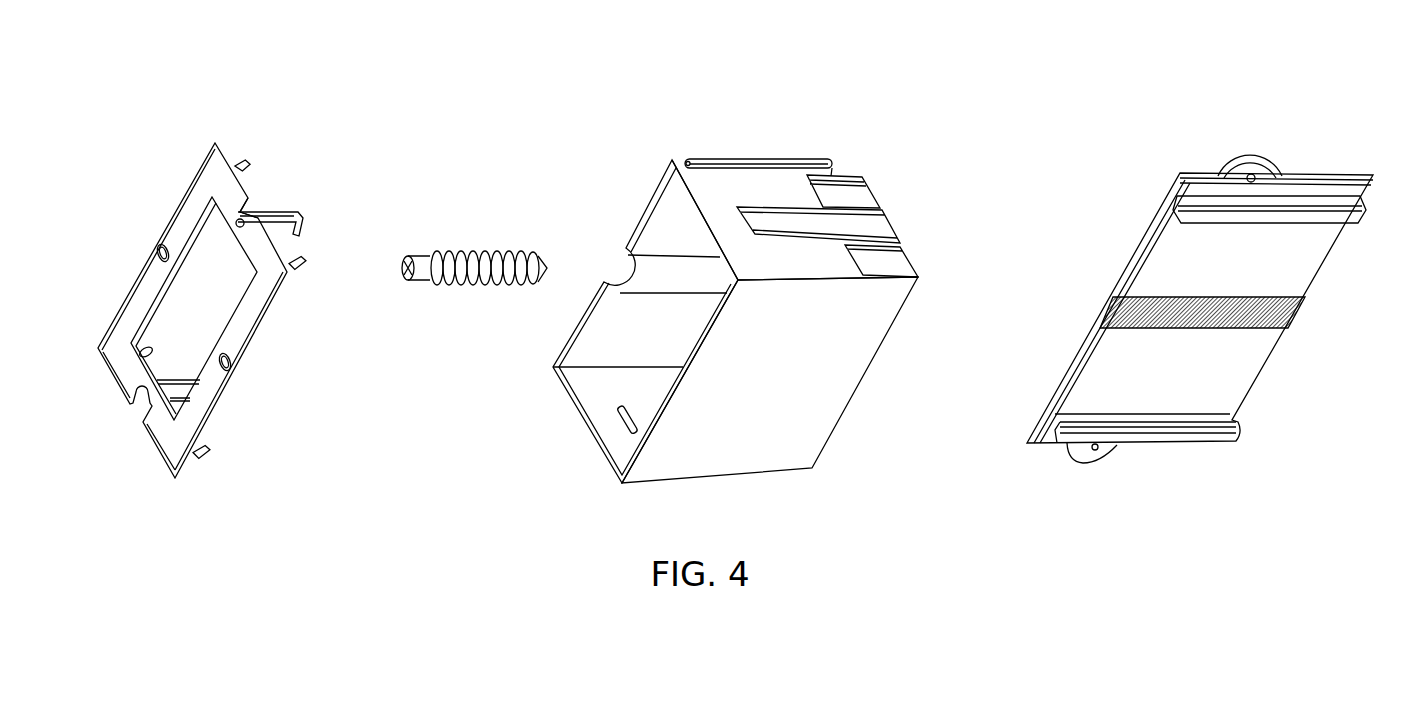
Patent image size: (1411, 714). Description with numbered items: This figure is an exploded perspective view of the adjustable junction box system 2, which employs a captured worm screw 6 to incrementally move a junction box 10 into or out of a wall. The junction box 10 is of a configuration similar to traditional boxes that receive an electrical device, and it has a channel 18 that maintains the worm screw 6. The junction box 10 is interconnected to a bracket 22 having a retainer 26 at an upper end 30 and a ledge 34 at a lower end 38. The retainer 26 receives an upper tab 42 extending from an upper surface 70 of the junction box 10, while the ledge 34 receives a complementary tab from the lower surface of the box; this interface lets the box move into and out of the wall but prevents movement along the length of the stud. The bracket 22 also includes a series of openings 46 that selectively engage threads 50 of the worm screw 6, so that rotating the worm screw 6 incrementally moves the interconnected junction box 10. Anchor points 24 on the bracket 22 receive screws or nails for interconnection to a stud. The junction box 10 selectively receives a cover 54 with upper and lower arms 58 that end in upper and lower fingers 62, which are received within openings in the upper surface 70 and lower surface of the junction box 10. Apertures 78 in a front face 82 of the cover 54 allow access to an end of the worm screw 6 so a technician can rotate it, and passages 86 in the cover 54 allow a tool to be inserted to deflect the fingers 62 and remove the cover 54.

The adjustable junction box system 2 is at (650, 113).
The worm screw 6 is at (463, 244).
The junction box 10 is at (757, 324).
The channel 18 is at (616, 268).
The bracket 22 is at (1186, 309).
The anchor points 24 is at (1253, 173).
The retainer 26 is at (1210, 205).
The upper end 30 is at (1322, 178).
The ledge 34 is at (1187, 435).
The lower end 38 is at (1043, 445).
The upper tab 42 is at (775, 165).
The openings 46 is at (757, 217).
The threads 50 is at (413, 285).
The cover 54 is at (208, 400).
The upper and lower arms 58 is at (273, 208).
The upper and lower fingers 62 is at (300, 217).
The upper surface 70 is at (817, 268).
The apertures 78 is at (160, 247).
The front face 82 is at (165, 438).
The passages 86 is at (847, 220).